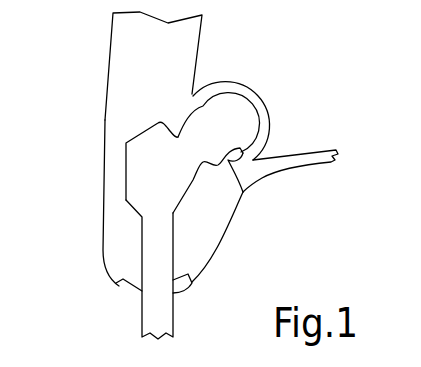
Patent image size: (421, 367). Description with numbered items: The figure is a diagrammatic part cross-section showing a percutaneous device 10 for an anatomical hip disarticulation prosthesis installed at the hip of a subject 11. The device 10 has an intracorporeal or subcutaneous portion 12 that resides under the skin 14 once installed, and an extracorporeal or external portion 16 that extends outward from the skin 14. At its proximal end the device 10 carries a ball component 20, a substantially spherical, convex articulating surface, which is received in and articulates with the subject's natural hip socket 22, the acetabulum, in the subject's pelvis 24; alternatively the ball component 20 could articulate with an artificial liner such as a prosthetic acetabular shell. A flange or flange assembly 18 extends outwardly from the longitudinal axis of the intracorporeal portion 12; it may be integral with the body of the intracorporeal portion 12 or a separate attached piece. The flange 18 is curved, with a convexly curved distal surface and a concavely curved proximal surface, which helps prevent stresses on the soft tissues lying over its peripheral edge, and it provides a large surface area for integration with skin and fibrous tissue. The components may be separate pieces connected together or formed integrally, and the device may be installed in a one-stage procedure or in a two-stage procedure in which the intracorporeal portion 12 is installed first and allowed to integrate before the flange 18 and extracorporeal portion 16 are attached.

The percutaneous device 10 is at (132, 223).
The subject 11 is at (100, 98).
The intracorporeal portion 12 is at (152, 248).
The skin 14 is at (196, 285).
The extracorporeal portion 16 is at (152, 313).
The flange assembly 18 is at (122, 288).
The ball component 20 is at (205, 115).
The hip socket 22 is at (231, 221).
The pelvis 24 is at (293, 143).